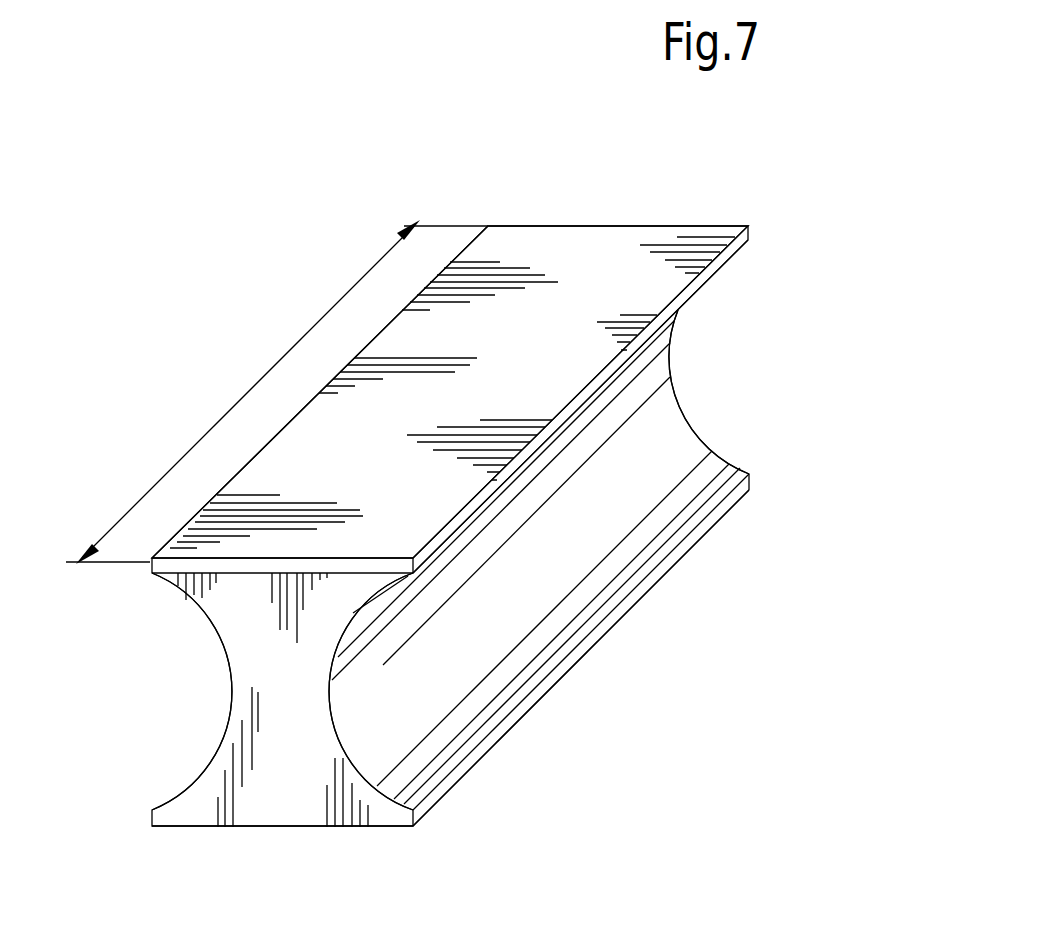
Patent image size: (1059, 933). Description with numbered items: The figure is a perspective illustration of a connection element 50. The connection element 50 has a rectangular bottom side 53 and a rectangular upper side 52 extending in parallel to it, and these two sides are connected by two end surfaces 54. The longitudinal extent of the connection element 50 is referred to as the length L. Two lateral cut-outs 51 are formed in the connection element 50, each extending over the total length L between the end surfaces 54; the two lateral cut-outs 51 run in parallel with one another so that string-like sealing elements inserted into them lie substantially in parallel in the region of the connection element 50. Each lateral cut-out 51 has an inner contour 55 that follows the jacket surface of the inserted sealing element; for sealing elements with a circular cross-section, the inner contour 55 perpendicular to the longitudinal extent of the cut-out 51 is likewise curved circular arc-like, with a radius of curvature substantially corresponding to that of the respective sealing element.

The connection element 50 is at (582, 170).
The lateral cut-out 51 is at (193, 684).
The upper side 52 is at (512, 252).
The bottom side 53 is at (378, 828).
The end surface 54 is at (682, 376).
The inner contour 55 is at (213, 618).
The length L is at (268, 376).